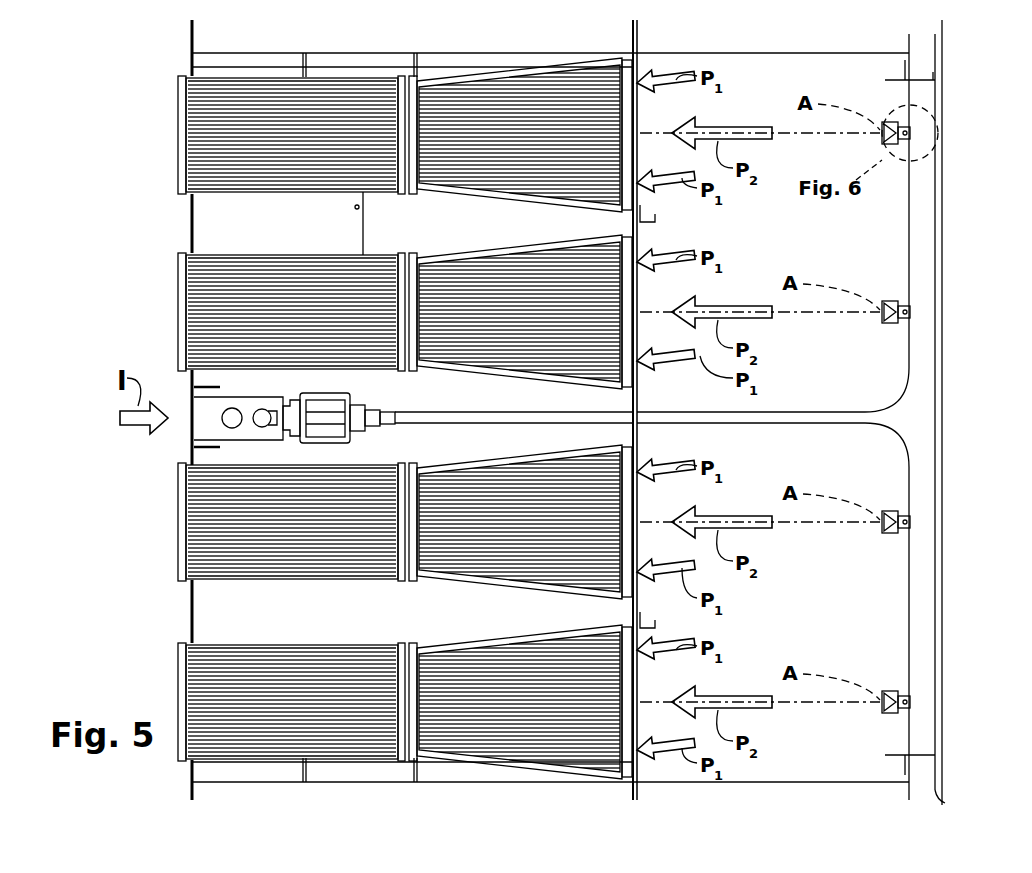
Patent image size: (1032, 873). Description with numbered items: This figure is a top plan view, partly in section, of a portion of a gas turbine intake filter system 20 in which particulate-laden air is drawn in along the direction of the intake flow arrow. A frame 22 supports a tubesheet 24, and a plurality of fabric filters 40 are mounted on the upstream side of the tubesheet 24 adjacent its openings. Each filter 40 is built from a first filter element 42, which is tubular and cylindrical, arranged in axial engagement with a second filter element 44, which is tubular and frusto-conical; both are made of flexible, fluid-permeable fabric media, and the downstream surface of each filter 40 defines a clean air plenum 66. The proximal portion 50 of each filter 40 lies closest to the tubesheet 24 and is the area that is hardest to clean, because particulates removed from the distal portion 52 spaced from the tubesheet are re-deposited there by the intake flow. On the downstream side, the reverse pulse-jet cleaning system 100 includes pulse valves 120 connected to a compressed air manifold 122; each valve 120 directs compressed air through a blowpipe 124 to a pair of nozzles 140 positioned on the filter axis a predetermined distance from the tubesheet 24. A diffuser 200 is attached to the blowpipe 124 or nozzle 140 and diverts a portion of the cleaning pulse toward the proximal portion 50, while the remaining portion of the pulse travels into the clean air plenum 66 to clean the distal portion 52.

The gas turbine intake filter system 20 is at (656, 42).
The frame 22 is at (425, 53).
The tubesheet 24 is at (640, 397).
The fabric filter 40 is at (396, 74).
The first filter element 42 is at (302, 193).
The second filter element 44 is at (517, 418).
The proximal portion of the filter 50 is at (574, 60).
The distal portion of the filter 52 is at (285, 76).
The clean air plenum 66 is at (509, 145).
The reverse pulse-jet cleaning system 100 is at (922, 413).
The pulse valve 120 is at (270, 425).
The compressed air manifold 122 is at (312, 392).
The blowpipe 124 is at (946, 232).
The nozzle 140 is at (888, 122).
The diffuser 200 is at (882, 140).